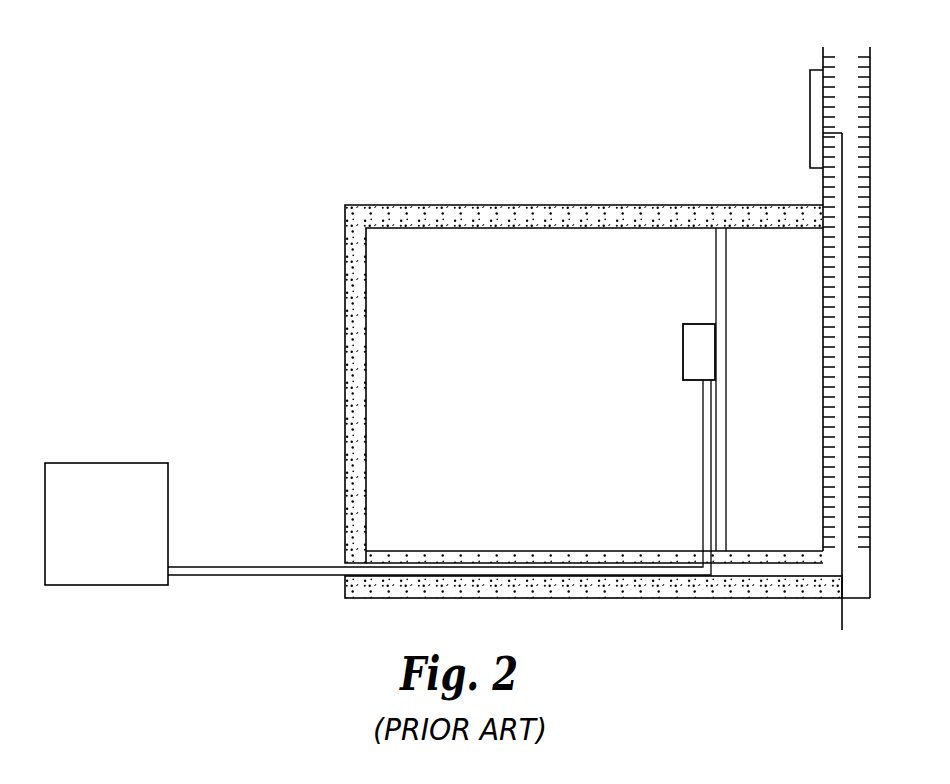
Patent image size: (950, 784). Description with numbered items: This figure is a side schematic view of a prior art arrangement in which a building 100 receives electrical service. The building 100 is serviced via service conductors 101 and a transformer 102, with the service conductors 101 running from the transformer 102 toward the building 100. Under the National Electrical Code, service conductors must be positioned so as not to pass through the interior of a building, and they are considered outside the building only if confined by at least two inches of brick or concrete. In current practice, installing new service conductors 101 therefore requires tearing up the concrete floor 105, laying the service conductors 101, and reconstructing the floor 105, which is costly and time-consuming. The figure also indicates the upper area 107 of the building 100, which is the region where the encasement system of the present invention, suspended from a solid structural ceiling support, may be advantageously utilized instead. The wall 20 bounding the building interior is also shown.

The building 100 is at (457, 342).
The service conductors 101 is at (257, 576).
The transformer 102 is at (88, 533).
The concrete floor 105 is at (476, 551).
The upper area 107 is at (515, 296).
The wall 20 is at (433, 229).